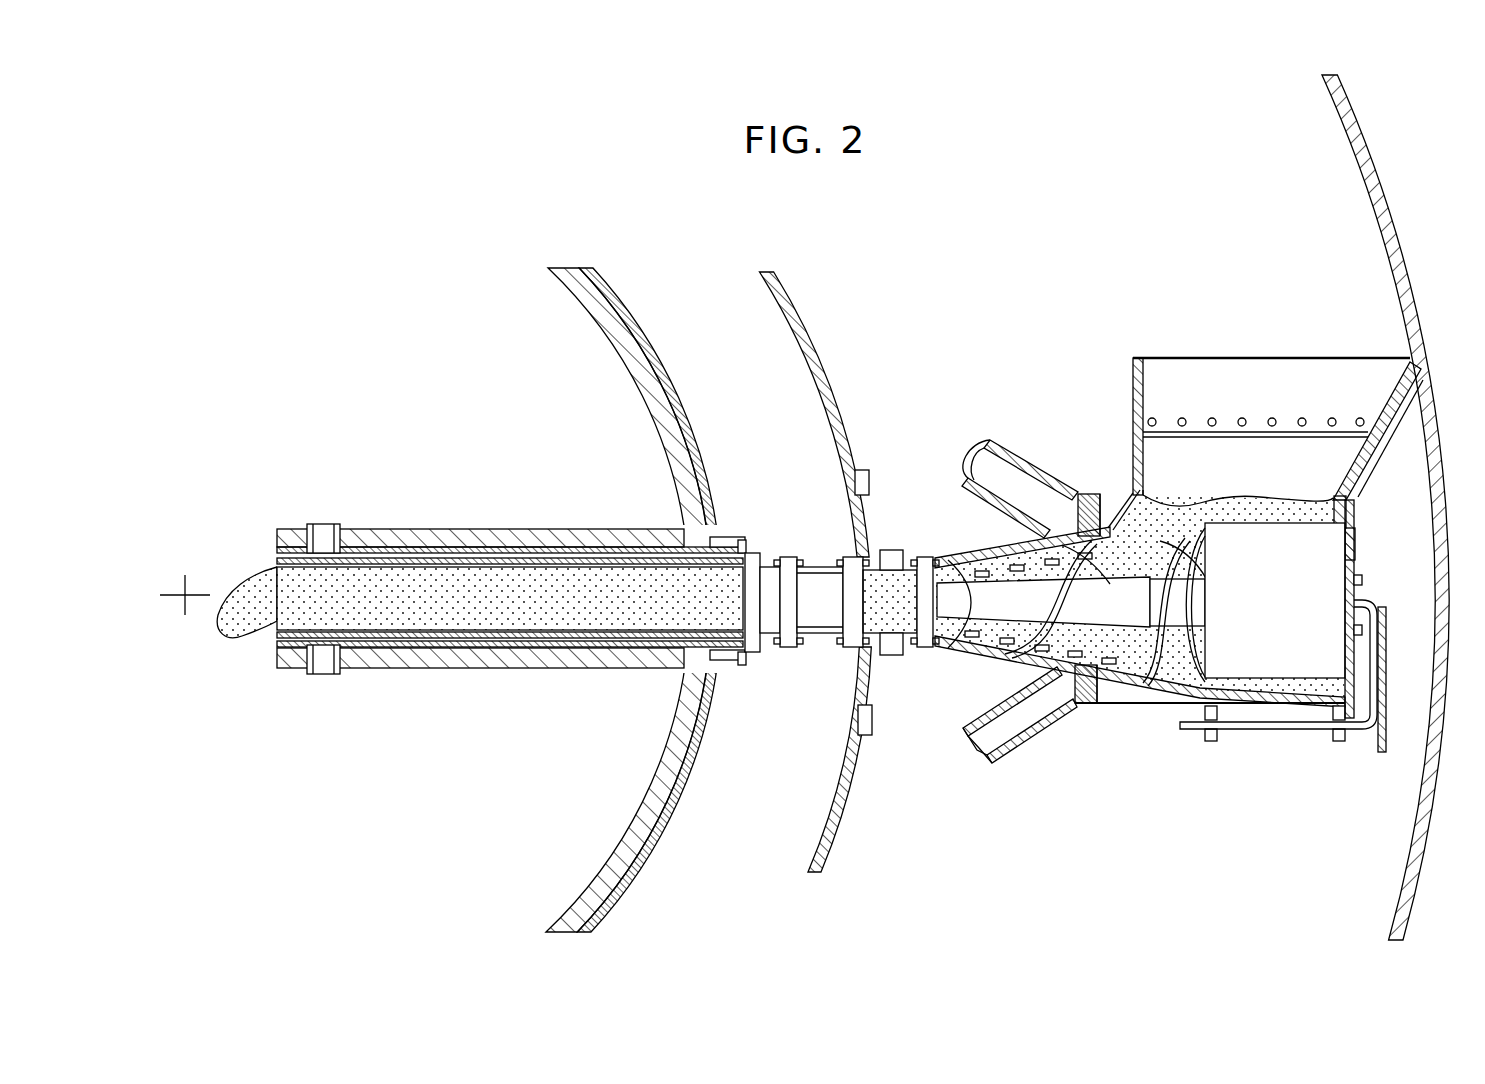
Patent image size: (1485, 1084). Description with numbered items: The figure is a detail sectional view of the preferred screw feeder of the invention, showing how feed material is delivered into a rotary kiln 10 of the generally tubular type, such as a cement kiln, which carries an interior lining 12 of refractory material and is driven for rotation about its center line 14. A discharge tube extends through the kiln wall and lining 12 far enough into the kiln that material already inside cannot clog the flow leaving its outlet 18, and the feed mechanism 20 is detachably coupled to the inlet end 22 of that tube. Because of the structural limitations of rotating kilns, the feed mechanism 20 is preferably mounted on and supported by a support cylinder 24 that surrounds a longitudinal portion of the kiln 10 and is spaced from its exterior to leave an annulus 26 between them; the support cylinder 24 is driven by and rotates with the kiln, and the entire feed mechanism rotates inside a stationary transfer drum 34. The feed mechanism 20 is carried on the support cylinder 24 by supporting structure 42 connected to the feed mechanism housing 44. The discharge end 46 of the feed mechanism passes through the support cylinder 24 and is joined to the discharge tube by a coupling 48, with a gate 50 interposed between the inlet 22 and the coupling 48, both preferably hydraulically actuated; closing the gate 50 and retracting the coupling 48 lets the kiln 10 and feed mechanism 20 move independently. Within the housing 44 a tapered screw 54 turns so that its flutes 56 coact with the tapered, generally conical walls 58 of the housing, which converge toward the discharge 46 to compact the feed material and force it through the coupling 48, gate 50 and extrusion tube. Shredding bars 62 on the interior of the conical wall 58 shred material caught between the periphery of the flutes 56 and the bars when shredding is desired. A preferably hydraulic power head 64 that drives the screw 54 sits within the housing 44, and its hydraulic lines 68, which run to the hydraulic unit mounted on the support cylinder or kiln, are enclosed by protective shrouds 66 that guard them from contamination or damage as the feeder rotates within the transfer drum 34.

The kiln 10 is at (579, 243).
The interior lining 12 is at (548, 271).
The center line 14 is at (180, 592).
The outlet 18 is at (277, 566).
The feed mechanism 20 is at (1001, 528).
The inlet end 22 is at (748, 660).
The support cylinder 24 is at (775, 277).
The annulus 26 is at (736, 801).
The stationary transfer drum 34 is at (1324, 87).
The supporting structure 42 is at (1008, 752).
The feed mechanism housing 44 is at (1133, 705).
The discharge end 46 is at (922, 647).
The coupling 48 is at (821, 562).
The gate 50 is at (767, 553).
The tapered screw 54 is at (1118, 582).
The flutes 56 is at (1077, 588).
The tapered walls 58 is at (1048, 668).
The shredding bars 62 is at (1108, 682).
The power head 64 is at (1355, 597).
The protective shrouds 66 is at (1386, 752).
The hydraulic lines 68 is at (1360, 735).